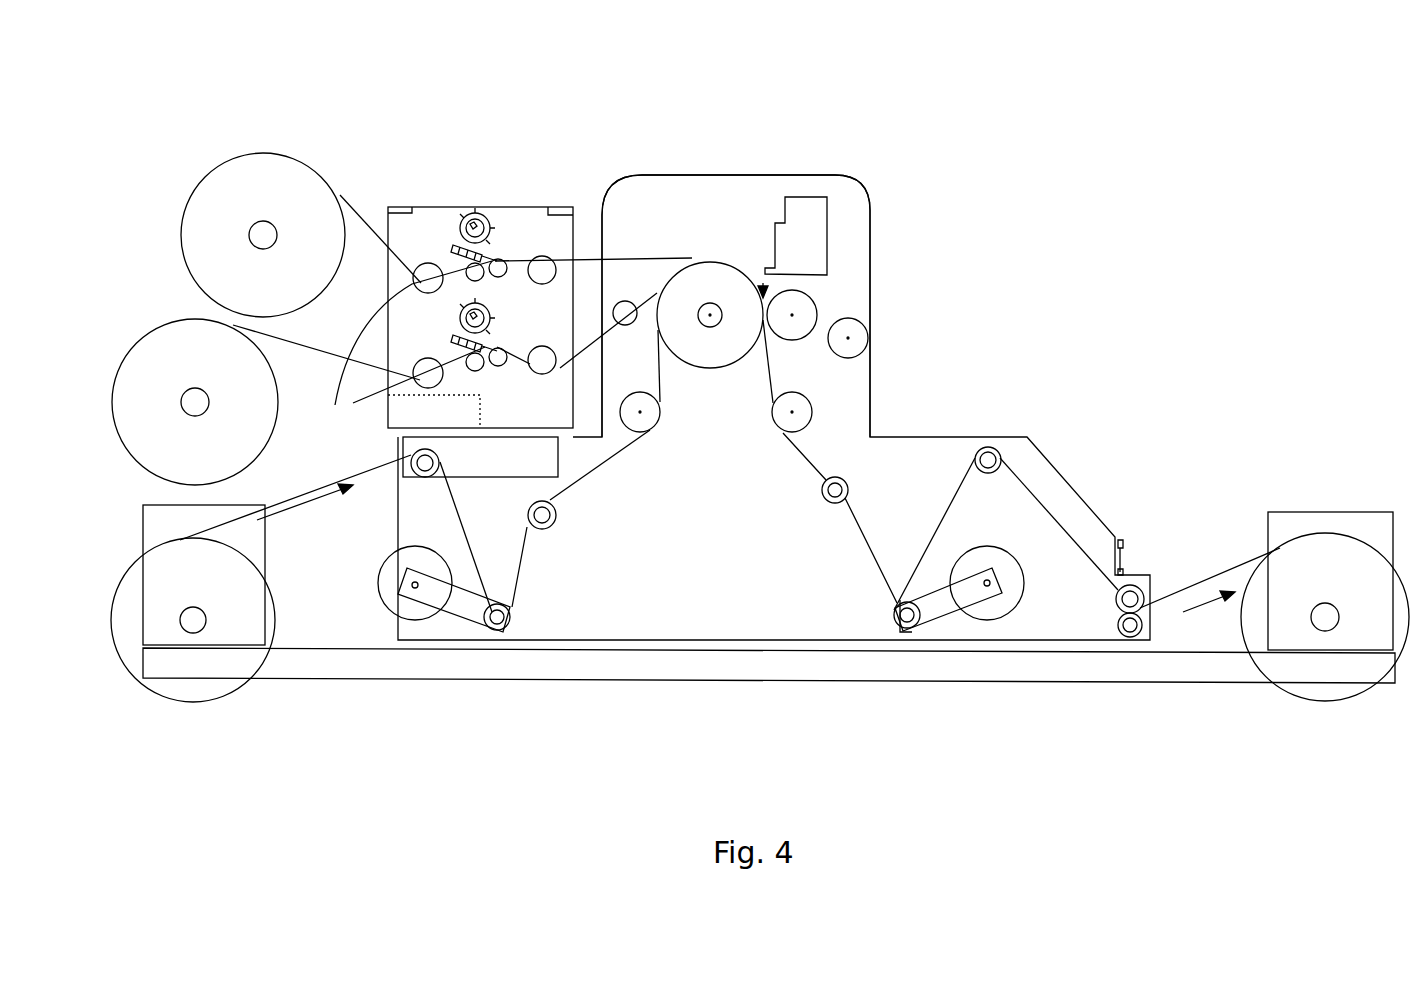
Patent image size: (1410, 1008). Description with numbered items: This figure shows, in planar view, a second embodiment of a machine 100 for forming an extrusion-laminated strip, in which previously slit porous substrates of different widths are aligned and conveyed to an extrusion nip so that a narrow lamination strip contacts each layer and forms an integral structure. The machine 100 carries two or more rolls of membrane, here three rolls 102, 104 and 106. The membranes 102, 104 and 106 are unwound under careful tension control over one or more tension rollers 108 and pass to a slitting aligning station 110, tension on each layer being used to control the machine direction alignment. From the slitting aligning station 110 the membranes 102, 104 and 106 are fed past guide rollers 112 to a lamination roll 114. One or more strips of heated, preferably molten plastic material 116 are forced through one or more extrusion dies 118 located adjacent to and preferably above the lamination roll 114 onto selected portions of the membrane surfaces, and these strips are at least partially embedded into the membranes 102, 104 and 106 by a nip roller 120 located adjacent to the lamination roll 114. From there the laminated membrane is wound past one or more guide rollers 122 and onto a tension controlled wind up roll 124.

The machine 100 is at (445, 158).
The roll of membrane 102 is at (262, 221).
The roll of membrane 104 is at (181, 403).
The roll of membrane 106 is at (178, 618).
The tension rollers 108 is at (398, 447).
The slitting aligning station 110 is at (513, 227).
The guide rollers 112 is at (537, 262).
The lamination roll 114 is at (702, 348).
The heated plastic material 116 is at (715, 250).
The extrusion dies 118 is at (822, 242).
The nip roller 120 is at (780, 322).
The guide rollers 122 is at (988, 447).
The wind up roll 124 is at (1327, 570).